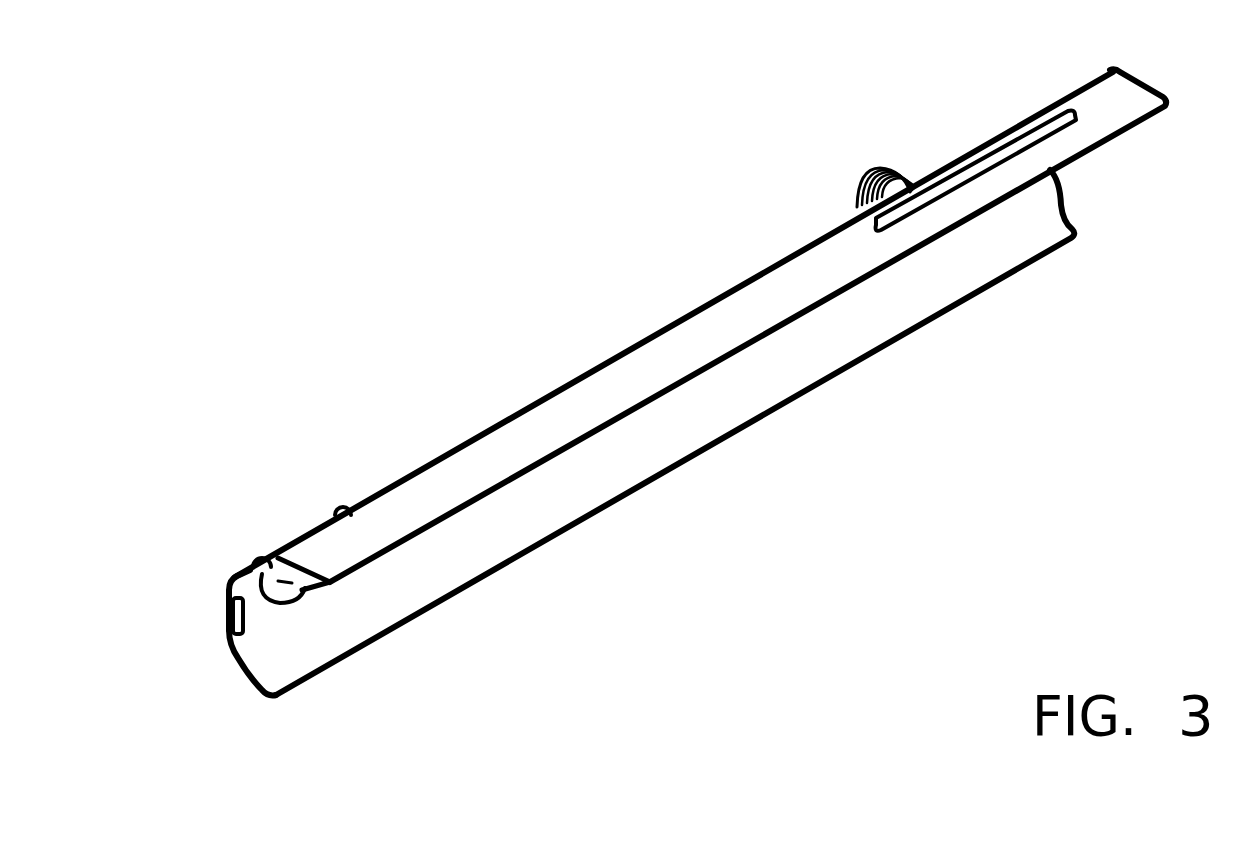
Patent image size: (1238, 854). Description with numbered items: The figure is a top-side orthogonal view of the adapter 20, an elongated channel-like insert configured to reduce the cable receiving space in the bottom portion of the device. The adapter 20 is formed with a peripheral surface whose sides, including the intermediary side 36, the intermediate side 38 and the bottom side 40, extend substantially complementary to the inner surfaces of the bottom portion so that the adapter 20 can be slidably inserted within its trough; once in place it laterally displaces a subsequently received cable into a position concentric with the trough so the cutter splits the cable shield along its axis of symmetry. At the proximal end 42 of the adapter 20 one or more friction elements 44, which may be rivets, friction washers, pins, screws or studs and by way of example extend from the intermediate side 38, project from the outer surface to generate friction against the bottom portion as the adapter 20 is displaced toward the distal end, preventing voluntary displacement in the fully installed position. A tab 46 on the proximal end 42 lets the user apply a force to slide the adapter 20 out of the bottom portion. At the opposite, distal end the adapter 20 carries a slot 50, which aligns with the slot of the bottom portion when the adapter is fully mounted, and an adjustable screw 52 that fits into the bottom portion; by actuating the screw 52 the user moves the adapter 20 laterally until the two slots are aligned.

The adapter 20 is at (636, 423).
The intermediary side 36 is at (513, 455).
The intermediate side 38 is at (257, 607).
The bottom side 40 is at (370, 610).
The proximal end 42 is at (245, 662).
The friction elements 44 is at (247, 570).
The tab 46 is at (233, 618).
The slot 50 is at (1067, 127).
The adjustable screw 52 is at (878, 167).